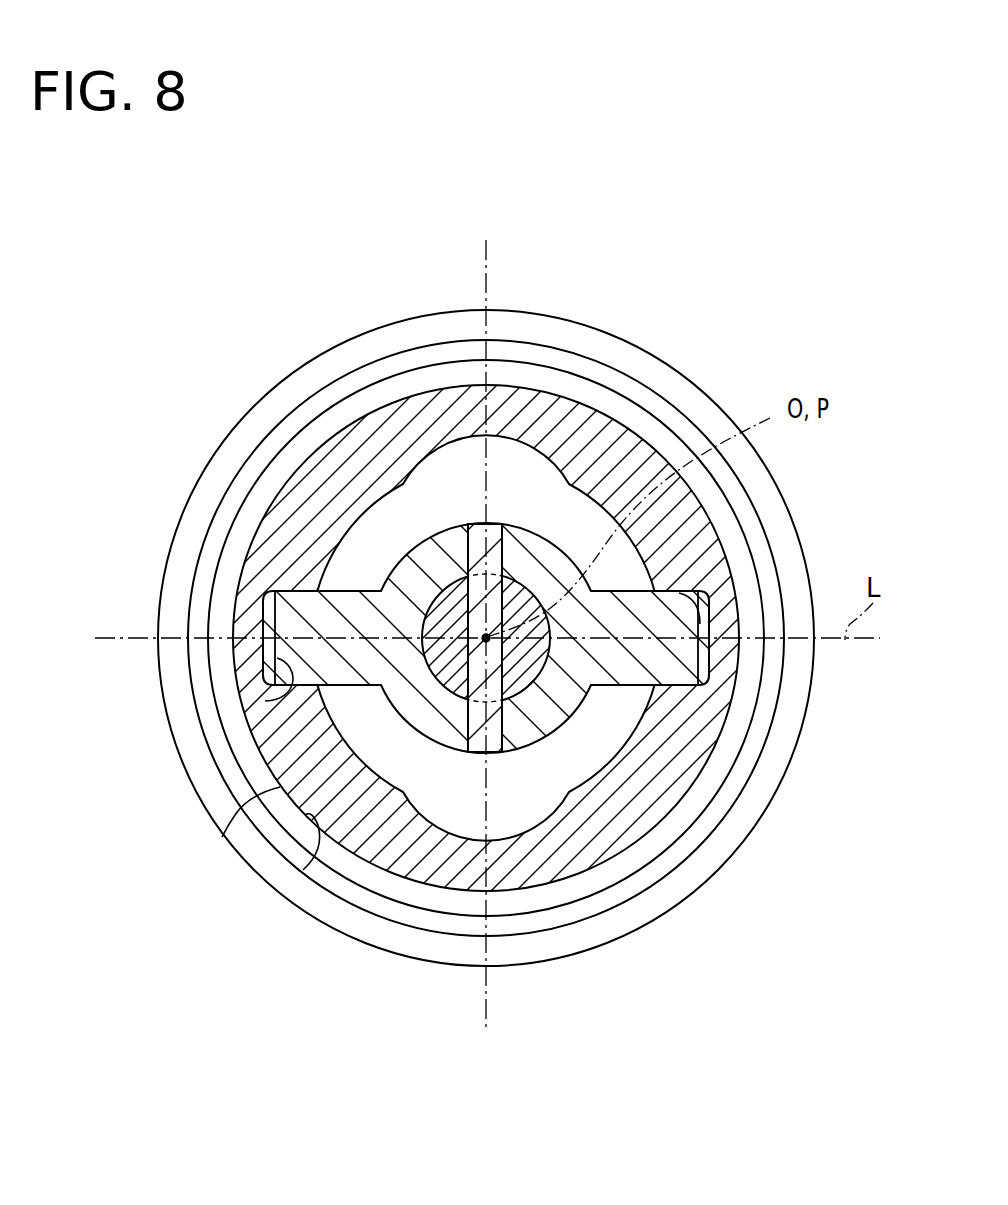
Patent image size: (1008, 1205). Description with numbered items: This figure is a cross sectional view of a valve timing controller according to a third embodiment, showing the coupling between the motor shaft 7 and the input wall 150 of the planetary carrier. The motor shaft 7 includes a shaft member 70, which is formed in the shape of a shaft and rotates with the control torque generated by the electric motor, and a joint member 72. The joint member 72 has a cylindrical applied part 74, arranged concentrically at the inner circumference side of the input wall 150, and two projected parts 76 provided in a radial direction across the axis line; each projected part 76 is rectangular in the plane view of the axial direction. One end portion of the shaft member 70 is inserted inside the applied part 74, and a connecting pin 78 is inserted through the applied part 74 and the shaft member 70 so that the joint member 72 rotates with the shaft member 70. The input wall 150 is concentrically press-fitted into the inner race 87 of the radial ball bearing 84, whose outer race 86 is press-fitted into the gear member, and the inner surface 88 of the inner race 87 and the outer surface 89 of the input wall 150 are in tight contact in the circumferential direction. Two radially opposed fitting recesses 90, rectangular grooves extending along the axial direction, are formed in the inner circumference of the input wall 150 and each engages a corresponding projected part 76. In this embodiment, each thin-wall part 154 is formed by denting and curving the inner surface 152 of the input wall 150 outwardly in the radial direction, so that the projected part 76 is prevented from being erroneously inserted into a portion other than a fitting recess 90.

The motor shaft 7 is at (798, 893).
The shaft member 70 is at (573, 700).
The joint member 72 is at (555, 710).
The applied part 74 is at (573, 693).
The projected part 76 is at (280, 590).
The connecting pin 78 is at (528, 690).
The radial ball bearing 84 is at (215, 255).
The outer race 86 is at (343, 357).
The inner race 87 is at (327, 423).
The inner surface 88 is at (303, 870).
The outer surface 89 is at (222, 837).
The fitting recess 90 is at (280, 697).
The input wall 150 is at (307, 482).
The inner surface 152 is at (630, 563).
The thin-wall part 154 is at (500, 400).